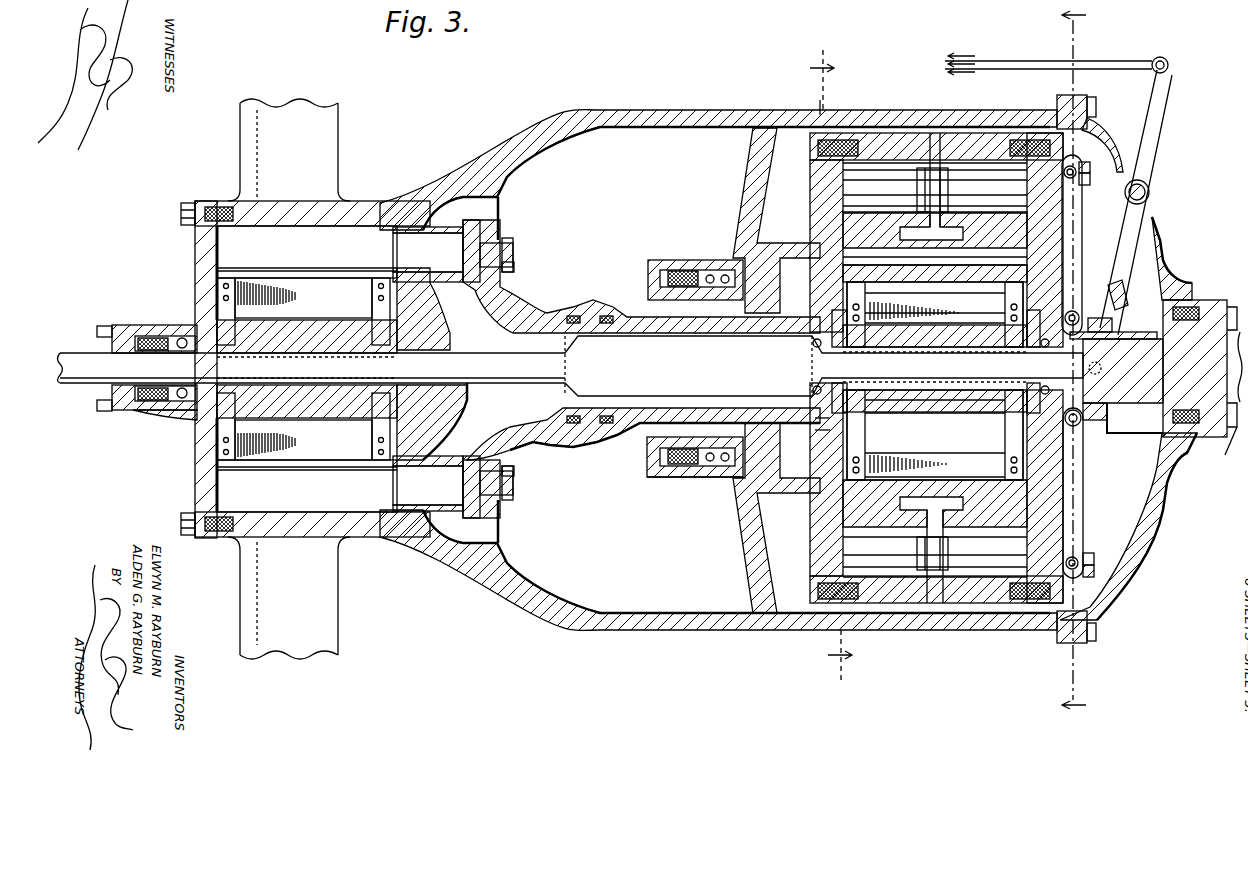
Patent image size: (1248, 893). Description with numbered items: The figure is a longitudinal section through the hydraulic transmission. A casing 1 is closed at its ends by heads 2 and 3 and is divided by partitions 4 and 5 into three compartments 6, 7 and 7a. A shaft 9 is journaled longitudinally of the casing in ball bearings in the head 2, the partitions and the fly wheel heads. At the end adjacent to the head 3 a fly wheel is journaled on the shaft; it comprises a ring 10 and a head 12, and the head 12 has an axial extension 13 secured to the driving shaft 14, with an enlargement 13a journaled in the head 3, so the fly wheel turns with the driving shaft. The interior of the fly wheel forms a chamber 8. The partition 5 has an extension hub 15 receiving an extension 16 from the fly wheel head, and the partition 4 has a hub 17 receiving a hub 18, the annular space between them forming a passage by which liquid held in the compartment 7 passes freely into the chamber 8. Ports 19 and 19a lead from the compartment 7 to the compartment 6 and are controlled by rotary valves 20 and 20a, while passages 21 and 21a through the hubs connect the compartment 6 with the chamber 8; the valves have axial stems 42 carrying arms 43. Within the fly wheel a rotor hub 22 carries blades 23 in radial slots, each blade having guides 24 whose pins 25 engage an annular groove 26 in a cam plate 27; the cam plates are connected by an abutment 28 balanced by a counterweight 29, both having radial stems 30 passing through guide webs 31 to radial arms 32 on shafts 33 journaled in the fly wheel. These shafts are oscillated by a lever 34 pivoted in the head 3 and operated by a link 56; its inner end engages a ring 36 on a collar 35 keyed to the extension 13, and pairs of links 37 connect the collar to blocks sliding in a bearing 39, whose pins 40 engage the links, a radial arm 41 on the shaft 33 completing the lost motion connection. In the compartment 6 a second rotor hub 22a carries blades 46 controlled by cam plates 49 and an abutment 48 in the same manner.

The casing 1 is at (823, 98).
The head 2 is at (195, 471).
The head 3 is at (1148, 538).
The partition 4 is at (1074, 364).
The partition 5 is at (735, 548).
The compartment 6 is at (307, 407).
The compartment 7 is at (738, 369).
The compartment 7a is at (1120, 521).
The chamber 8 is at (1010, 598).
The shaft 9 is at (571, 355).
The ring 10 is at (882, 125).
The head 12 is at (1050, 235).
The axial extension 13 is at (1142, 418).
The enlargement 13a is at (1185, 350).
The driving shaft 14 is at (1232, 432).
The extension hub or bearing 15 is at (662, 478).
The extension 16 is at (648, 440).
The bearing hub or extension 17 is at (590, 300).
The hub or extension 18 is at (548, 333).
The port 19 is at (502, 205).
The port 19a is at (478, 540).
The rotary valve 20 is at (436, 251).
The rotary valve 20a is at (455, 542).
The port or passage 21 is at (429, 309).
The port or passage 21a is at (478, 428).
The hub 22 is at (915, 405).
The hub 22a is at (337, 318).
The blades or vanes 23 is at (935, 381).
The guide 24 is at (812, 300).
The pin 25 is at (815, 438).
The annular groove 26 is at (815, 418).
The cam plate 27 is at (815, 460).
The abutment 28 is at (945, 495).
The counterweight 29 is at (1020, 243).
The radial stem 30 is at (934, 150).
The guide web 31 is at (822, 222).
The radial arm 32 is at (962, 150).
The shaft 33 is at (1005, 180).
The lever 34 is at (1152, 102).
The collar 35 is at (1111, 309).
The ring 36 is at (1092, 422).
The links 37 is at (1082, 270).
The bearing 39 is at (1088, 165).
The pin 40 is at (1094, 185).
The radial arm 41 is at (1090, 367).
The axial stem 42 is at (515, 252).
The arm 43 is at (512, 268).
The blades or vanes 46 is at (258, 283).
The abutment 48 is at (200, 325).
The cam plate 49 is at (200, 332).
The link 56 is at (1110, 62).